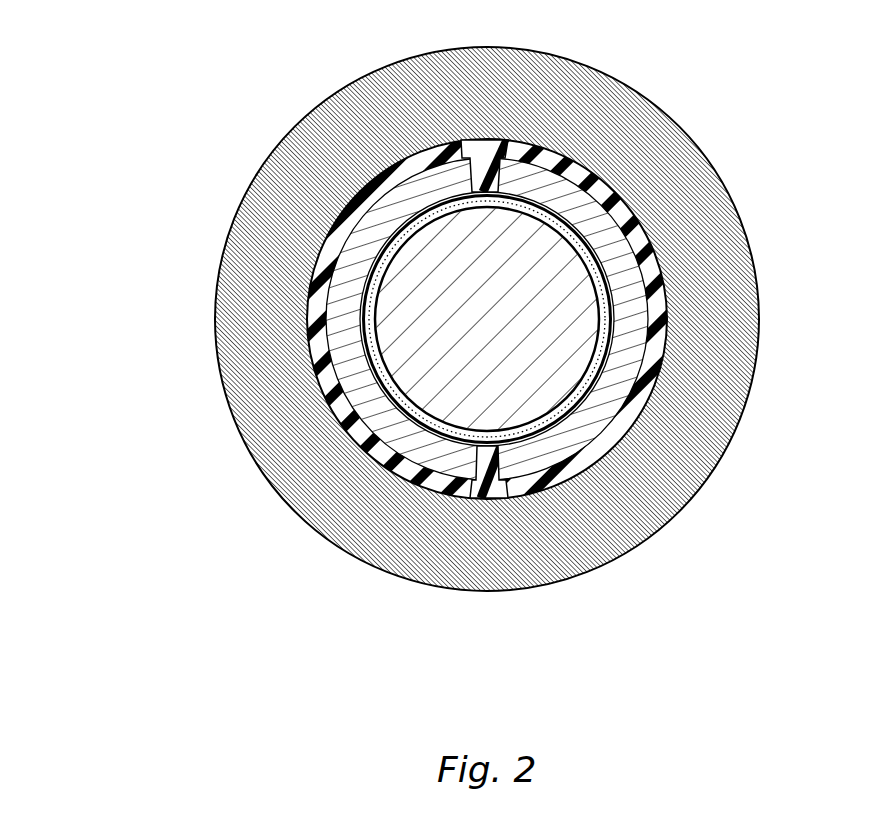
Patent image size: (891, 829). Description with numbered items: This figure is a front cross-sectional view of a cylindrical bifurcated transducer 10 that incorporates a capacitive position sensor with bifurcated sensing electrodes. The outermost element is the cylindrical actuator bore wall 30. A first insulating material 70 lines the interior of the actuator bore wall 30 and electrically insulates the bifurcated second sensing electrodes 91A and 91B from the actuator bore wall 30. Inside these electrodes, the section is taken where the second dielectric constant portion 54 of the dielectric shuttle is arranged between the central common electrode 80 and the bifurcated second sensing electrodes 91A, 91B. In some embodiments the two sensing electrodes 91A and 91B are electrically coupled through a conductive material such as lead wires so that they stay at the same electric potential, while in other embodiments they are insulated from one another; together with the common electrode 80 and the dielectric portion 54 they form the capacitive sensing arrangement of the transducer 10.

The bifurcated transducer 10 is at (647, 217).
The actuator bore wall 30 is at (368, 510).
The second dielectric constant portion 54 is at (540, 422).
The first insulating material 70 is at (484, 455).
The common electrode 80 is at (499, 323).
The bifurcated second sensing electrode 91A is at (363, 390).
The bifurcated second sensing electrode 91B is at (628, 355).